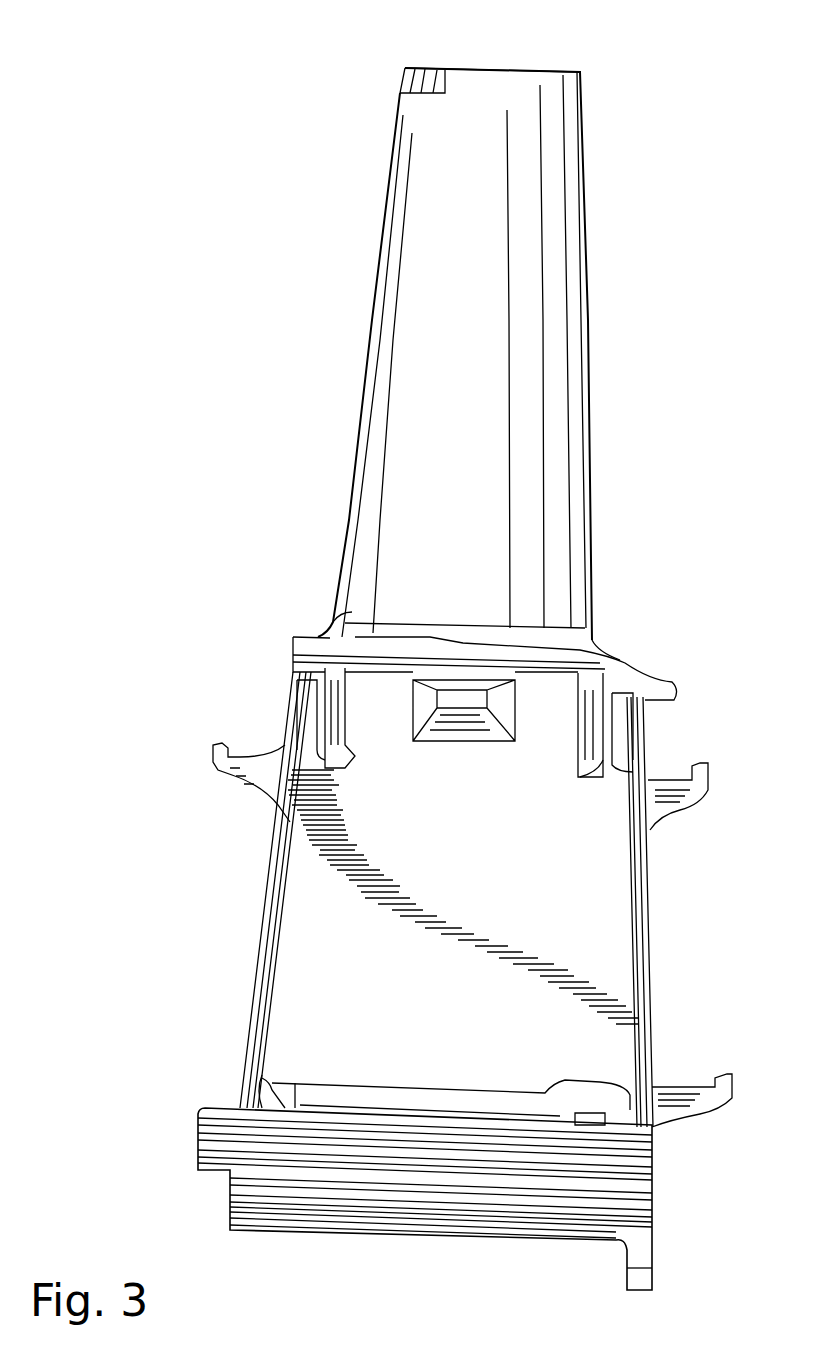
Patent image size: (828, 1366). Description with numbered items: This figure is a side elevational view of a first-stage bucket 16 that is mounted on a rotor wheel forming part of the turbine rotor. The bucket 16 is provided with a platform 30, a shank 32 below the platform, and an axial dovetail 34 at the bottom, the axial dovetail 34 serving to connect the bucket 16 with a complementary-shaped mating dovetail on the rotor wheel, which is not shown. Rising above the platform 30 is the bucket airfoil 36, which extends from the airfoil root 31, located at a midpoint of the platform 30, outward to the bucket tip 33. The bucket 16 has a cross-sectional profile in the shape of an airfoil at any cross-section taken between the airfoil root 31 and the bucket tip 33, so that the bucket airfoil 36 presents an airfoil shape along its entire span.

The bucket 16 is at (348, 512).
The platform 30 is at (430, 638).
The airfoil root 31 is at (458, 641).
The shank 32 is at (350, 876).
The bucket tip 33 is at (477, 70).
The axial dovetail 34 is at (265, 1135).
The bucket airfoil 36 is at (410, 390).